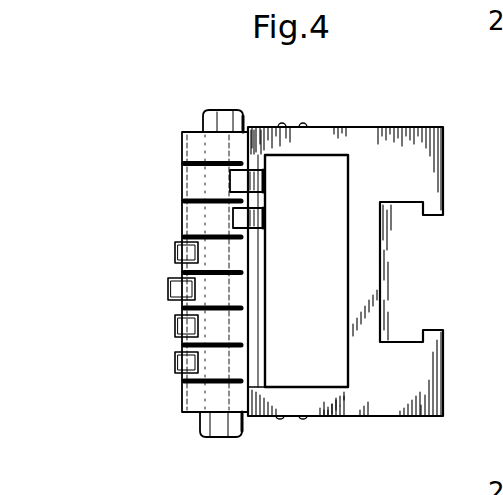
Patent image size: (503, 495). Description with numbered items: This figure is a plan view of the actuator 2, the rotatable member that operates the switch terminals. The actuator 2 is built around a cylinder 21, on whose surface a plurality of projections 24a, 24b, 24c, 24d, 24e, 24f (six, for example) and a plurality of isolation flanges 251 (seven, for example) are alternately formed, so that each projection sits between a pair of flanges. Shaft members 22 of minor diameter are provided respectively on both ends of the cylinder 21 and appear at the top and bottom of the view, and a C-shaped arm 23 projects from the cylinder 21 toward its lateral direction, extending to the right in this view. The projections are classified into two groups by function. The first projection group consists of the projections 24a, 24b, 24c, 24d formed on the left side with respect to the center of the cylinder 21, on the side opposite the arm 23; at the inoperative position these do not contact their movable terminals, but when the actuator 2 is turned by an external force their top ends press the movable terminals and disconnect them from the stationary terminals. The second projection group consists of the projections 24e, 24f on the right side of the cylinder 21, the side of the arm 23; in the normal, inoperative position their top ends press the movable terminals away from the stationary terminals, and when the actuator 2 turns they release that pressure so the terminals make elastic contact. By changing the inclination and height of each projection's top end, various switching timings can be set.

The actuator 2 is at (181, 395).
The cylinder 21 is at (197, 220).
The shaft members 22 is at (223, 118).
The C-shaped arm 23 is at (403, 138).
The projection 24a is at (182, 361).
The projection 24b is at (182, 321).
The projection 24c is at (172, 290).
The projection 24d is at (178, 250).
The projection 24e is at (256, 218).
The projection 24f is at (249, 178).
The isolation flanges 251 is at (197, 200).